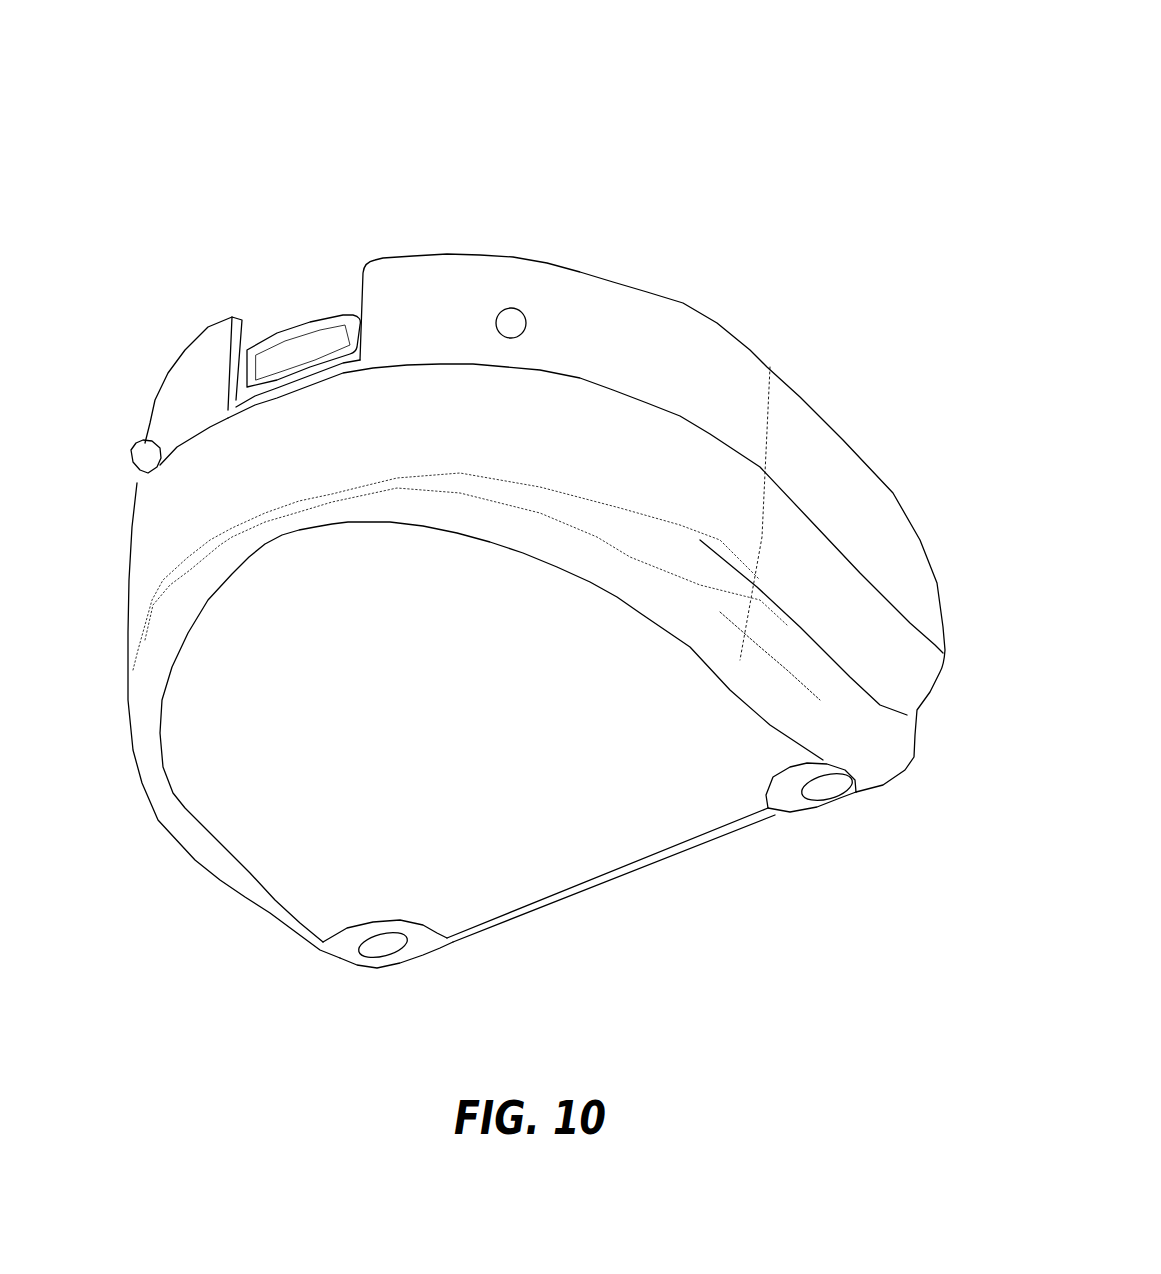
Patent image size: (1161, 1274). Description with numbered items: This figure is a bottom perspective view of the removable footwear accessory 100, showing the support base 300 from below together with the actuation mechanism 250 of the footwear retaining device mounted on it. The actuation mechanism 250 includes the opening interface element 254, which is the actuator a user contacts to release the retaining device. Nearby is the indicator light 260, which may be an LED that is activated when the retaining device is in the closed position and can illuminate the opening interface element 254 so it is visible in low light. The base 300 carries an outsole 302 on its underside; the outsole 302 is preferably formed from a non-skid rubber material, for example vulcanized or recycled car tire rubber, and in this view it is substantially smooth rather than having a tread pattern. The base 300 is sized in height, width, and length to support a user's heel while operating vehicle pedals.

The removable footwear accessory 100 is at (847, 128).
The actuation mechanism 250 is at (508, 225).
The opening interface element 254 is at (305, 357).
The indicator light 260 is at (147, 453).
The base 300 is at (806, 962).
The outsole 302 is at (400, 770).